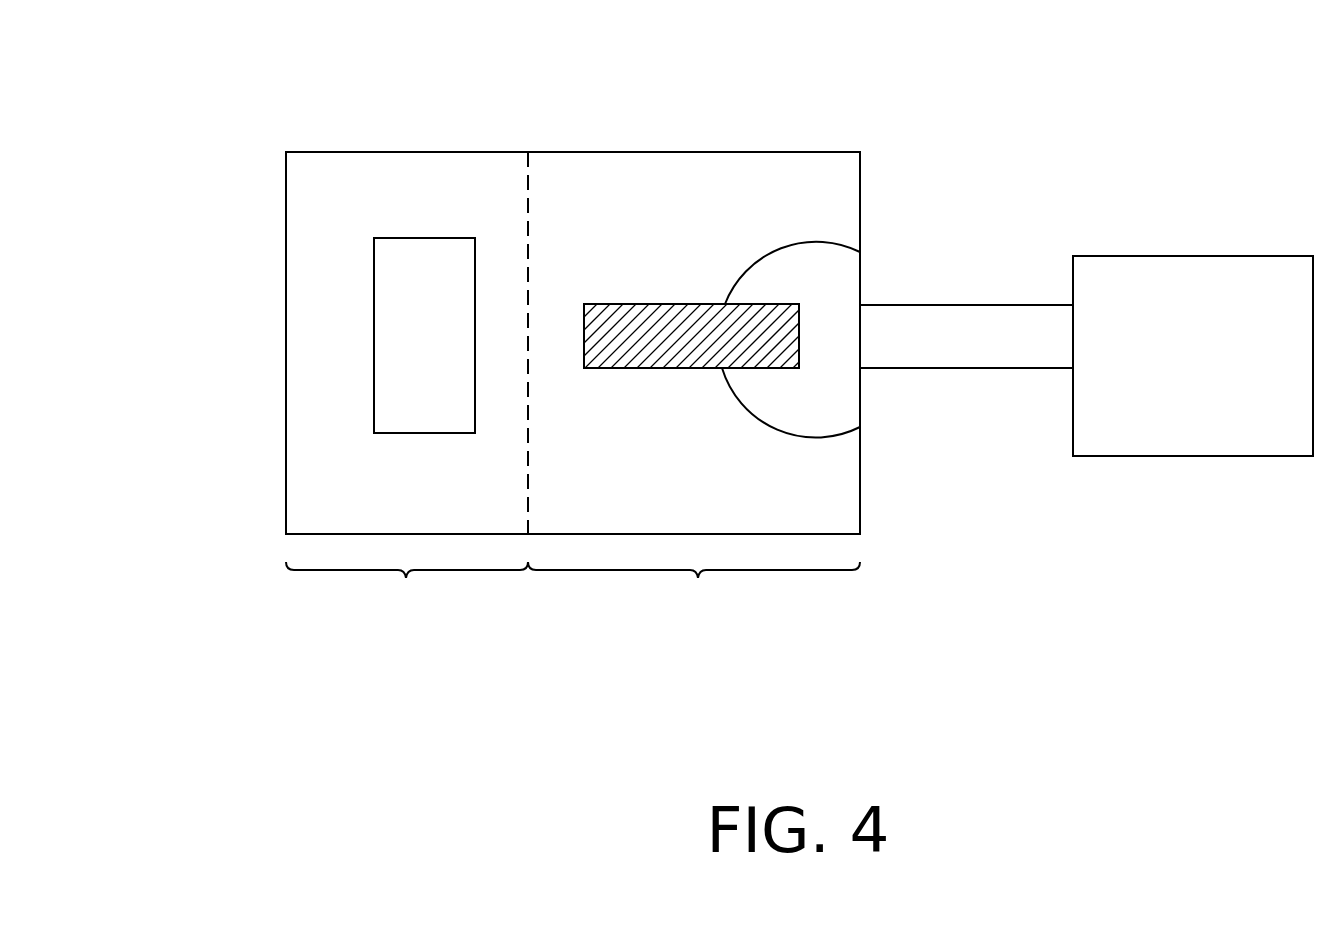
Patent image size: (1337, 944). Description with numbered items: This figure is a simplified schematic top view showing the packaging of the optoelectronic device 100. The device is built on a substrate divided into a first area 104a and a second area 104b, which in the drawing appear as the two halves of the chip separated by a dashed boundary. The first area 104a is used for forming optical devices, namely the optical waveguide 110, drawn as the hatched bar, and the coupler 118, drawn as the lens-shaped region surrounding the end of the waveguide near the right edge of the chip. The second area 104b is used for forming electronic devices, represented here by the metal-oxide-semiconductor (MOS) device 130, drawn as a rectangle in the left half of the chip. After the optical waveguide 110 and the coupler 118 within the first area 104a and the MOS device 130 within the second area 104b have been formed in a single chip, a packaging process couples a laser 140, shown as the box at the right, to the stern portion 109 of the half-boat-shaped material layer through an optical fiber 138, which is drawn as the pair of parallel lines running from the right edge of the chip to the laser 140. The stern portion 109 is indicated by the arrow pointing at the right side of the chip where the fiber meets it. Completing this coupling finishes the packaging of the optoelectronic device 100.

The optoelectronic device 100 is at (370, 112).
The first area 104a is at (694, 600).
The second area 104b is at (407, 599).
The stern portion 109 is at (880, 287).
The optical waveguide 110 is at (664, 330).
The coupler 118 is at (827, 282).
The metal-oxide-semiconductor (MOS) device 130 is at (424, 335).
The optical fiber 138 is at (966, 336).
The laser 140 is at (1193, 356).